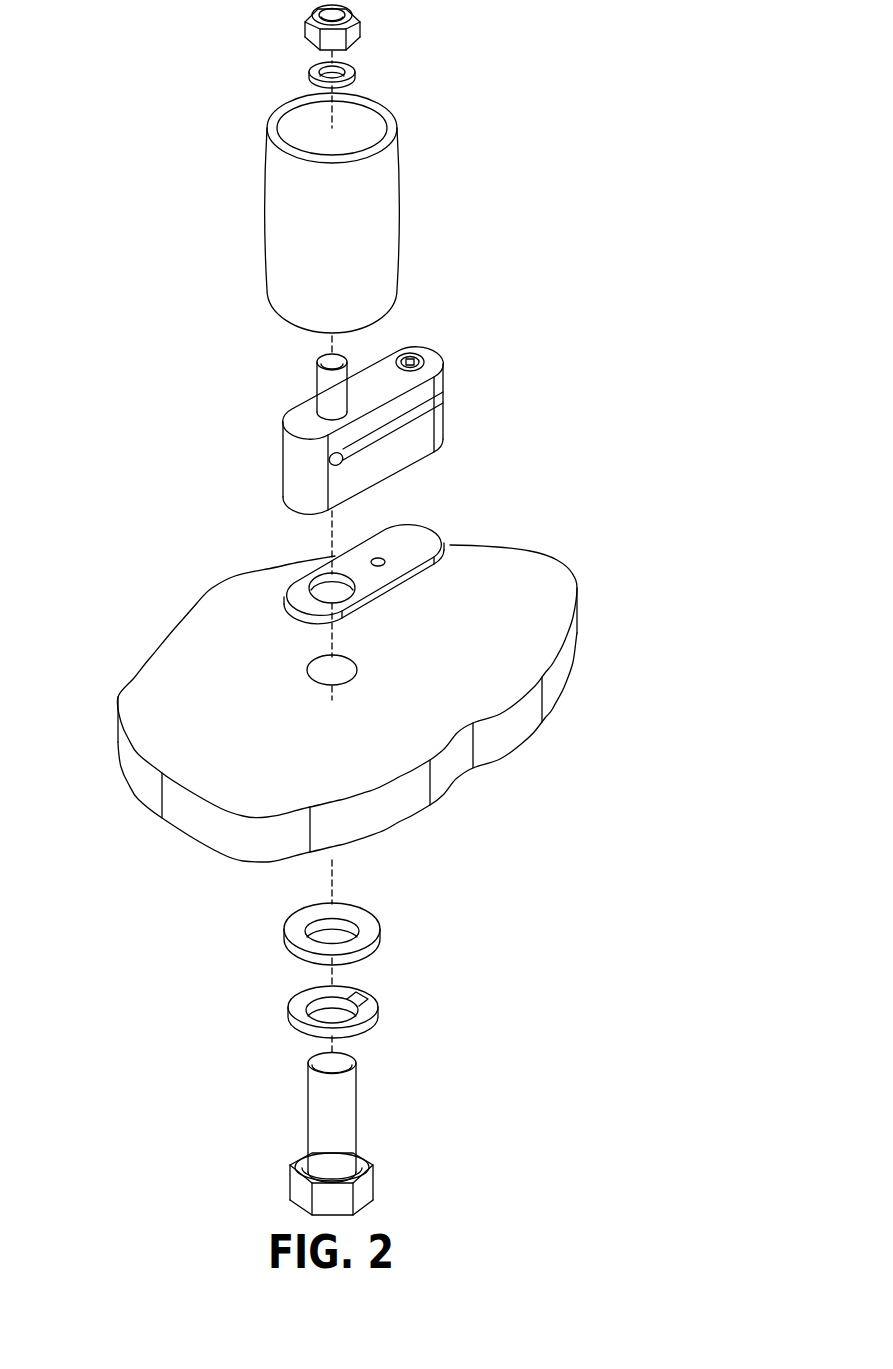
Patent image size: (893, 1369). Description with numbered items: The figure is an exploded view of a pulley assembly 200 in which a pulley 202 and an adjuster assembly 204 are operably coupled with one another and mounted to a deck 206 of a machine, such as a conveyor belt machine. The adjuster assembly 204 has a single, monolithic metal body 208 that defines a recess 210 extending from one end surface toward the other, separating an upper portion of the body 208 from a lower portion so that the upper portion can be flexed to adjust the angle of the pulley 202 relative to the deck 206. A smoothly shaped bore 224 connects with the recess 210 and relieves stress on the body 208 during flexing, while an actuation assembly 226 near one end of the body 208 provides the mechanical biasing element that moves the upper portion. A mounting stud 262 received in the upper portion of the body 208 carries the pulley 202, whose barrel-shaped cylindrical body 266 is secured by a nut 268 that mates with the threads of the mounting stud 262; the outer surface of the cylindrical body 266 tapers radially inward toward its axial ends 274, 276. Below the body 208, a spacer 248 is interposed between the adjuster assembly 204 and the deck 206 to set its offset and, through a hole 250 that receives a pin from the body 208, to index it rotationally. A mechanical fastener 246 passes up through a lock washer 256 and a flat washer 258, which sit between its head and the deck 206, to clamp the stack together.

The pulley assembly 200 is at (104, 26).
The pulley 202 is at (340, 222).
The adjuster assembly 204 is at (369, 416).
The deck 206 is at (462, 645).
The body 208 is at (316, 499).
The recess 210 is at (452, 397).
The bore 224 is at (321, 467).
The actuation assembly 226 is at (414, 355).
The mechanical fastener 246 is at (389, 1173).
The spacer 248 is at (393, 563).
The hole 250 is at (376, 557).
The lock washer 256 is at (366, 1008).
The flat washer 258 is at (375, 928).
The mounting stud 262 is at (326, 384).
The cylindrical body 266 is at (345, 287).
The nut 268 is at (362, 26).
The axial end 274 is at (277, 128).
The axial end 276 is at (273, 327).